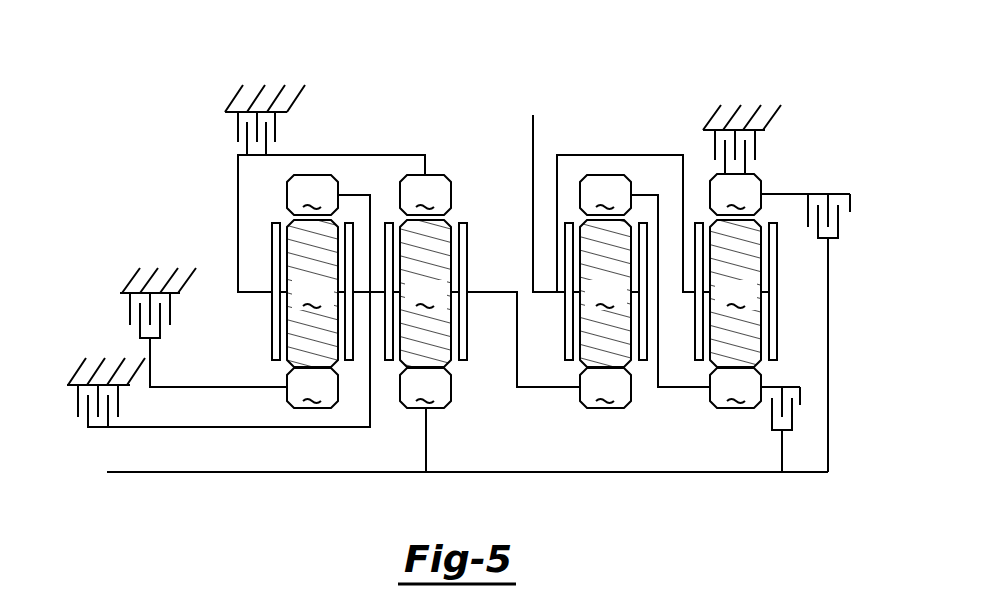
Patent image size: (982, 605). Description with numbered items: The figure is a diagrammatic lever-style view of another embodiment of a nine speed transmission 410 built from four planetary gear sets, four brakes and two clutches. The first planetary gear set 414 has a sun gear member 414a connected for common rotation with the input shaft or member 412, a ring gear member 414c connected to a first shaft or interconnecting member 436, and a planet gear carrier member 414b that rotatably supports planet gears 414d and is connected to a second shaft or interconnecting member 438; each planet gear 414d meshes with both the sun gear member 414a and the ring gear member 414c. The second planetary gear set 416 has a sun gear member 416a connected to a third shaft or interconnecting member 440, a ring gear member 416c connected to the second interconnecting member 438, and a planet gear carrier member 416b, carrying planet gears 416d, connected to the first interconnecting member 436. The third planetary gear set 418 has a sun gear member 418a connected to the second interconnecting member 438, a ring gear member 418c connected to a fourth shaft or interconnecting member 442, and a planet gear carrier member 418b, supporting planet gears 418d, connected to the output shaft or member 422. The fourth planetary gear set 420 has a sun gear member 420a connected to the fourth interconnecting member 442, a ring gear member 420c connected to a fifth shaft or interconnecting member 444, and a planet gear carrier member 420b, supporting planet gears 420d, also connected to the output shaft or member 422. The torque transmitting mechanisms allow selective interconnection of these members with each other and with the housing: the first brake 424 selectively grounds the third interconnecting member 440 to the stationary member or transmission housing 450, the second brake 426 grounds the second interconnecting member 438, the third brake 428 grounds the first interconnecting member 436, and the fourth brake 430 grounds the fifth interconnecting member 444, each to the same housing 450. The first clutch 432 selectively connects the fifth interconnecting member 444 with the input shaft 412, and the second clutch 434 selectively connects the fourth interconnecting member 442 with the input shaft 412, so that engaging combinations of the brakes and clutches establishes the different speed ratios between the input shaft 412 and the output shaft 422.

The transmission 410 is at (788, 57).
The input shaft or member 412 is at (190, 472).
The first planetary gear set 414 is at (431, 134).
The sun gear member 414a is at (425, 420).
The planet gear carrier member 414b is at (467, 265).
The ring gear member 414c is at (425, 195).
The planet gears 414d is at (426, 293).
The second planetary gear set 416 is at (323, 134).
The sun gear member 416a is at (312, 388).
The planet gear carrier member 416b is at (272, 328).
The ring gear member 416c is at (312, 195).
The planet gears 416d is at (312, 293).
The third planetary gear set 418 is at (611, 134).
The sun gear member 418a is at (605, 388).
The planet gear carrier member 418b is at (655, 352).
The ring gear member 418c is at (605, 195).
The planet gears 418d is at (606, 293).
The fourth planetary gear set 420 is at (783, 155).
The sun gear member 420a is at (735, 388).
The planet gear carrier member 420b is at (777, 303).
The ring gear member 420c is at (735, 194).
The planet gears 420d is at (736, 293).
The output shaft or member 422 is at (533, 123).
The first brake 424 is at (130, 307).
The second brake 426 is at (78, 397).
The third brake 428 is at (238, 128).
The fourth brake 430 is at (713, 137).
The first clutch 432 is at (850, 207).
The second clutch 434 is at (800, 403).
The first shaft or interconnecting member 436 is at (238, 191).
The second shaft or interconnecting member 438 is at (252, 428).
The third shaft or interconnecting member 440 is at (218, 388).
The fourth shaft or interconnecting member 442 is at (690, 388).
The fifth shaft or interconnecting member 444 is at (797, 194).
The stationary member or transmission housing 450 is at (242, 93).